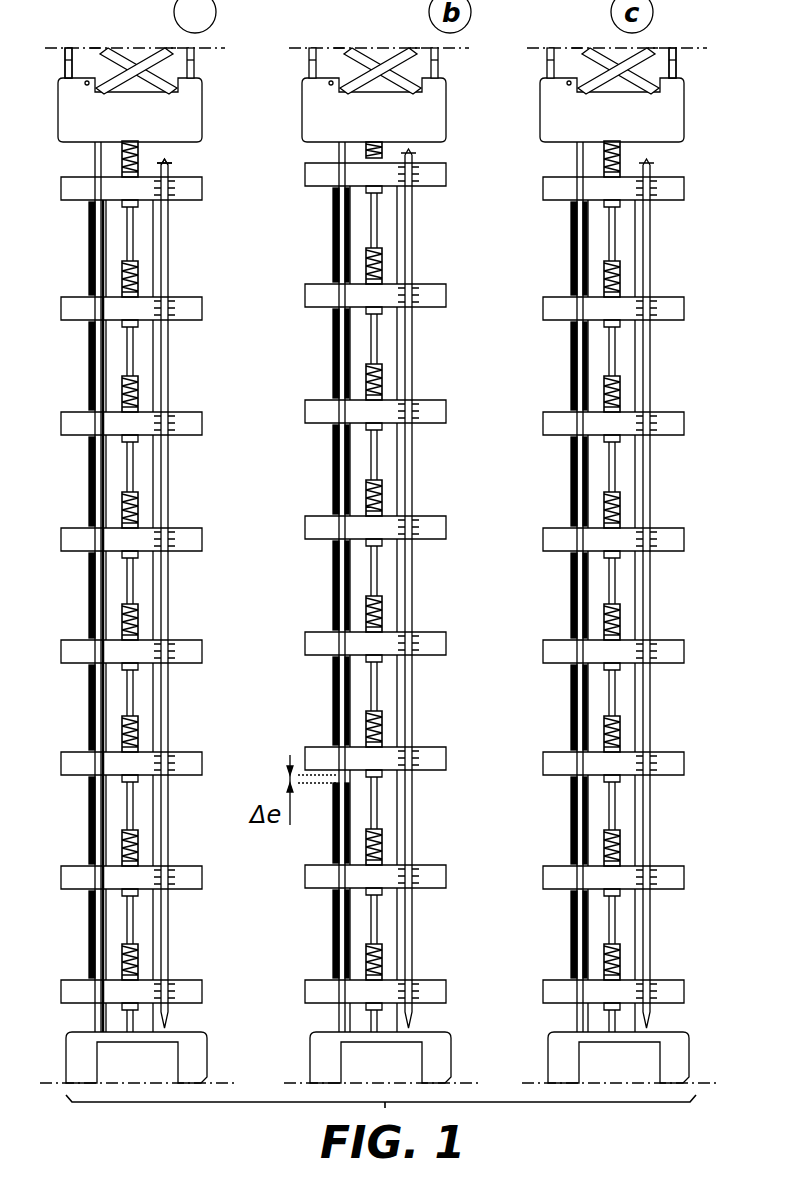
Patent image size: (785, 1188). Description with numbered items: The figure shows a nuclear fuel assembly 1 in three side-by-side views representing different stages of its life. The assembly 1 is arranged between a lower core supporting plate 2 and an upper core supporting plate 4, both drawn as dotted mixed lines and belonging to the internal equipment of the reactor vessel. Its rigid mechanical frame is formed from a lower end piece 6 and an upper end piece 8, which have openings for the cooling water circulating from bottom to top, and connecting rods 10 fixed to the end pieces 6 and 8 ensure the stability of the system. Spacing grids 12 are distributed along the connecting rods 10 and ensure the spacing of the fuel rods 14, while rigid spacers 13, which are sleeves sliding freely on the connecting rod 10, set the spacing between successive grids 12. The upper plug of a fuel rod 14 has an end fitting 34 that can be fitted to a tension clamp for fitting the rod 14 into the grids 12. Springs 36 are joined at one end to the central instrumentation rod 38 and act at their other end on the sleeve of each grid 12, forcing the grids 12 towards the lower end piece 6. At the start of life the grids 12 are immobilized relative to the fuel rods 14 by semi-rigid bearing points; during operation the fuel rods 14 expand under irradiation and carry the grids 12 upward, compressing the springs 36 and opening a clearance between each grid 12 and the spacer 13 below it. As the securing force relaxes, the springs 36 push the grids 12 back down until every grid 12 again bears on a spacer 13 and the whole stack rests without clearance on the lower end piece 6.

The fuel assembly 1 is at (62, 506).
The lower core supporting plate 2 is at (50, 1082).
The upper core supporting plate 4 is at (84, 47).
The lower end piece 6 is at (75, 1040).
The upper end piece 8 is at (72, 105).
The connecting rod 10 is at (95, 362).
The spacing grid 12 is at (70, 183).
The rigid spacer 13 is at (89, 252).
The fuel rod 14 is at (166, 258).
The end fitting 34 is at (168, 162).
The spring 36 is at (138, 620).
The central instrumentation rod 38 is at (132, 583).